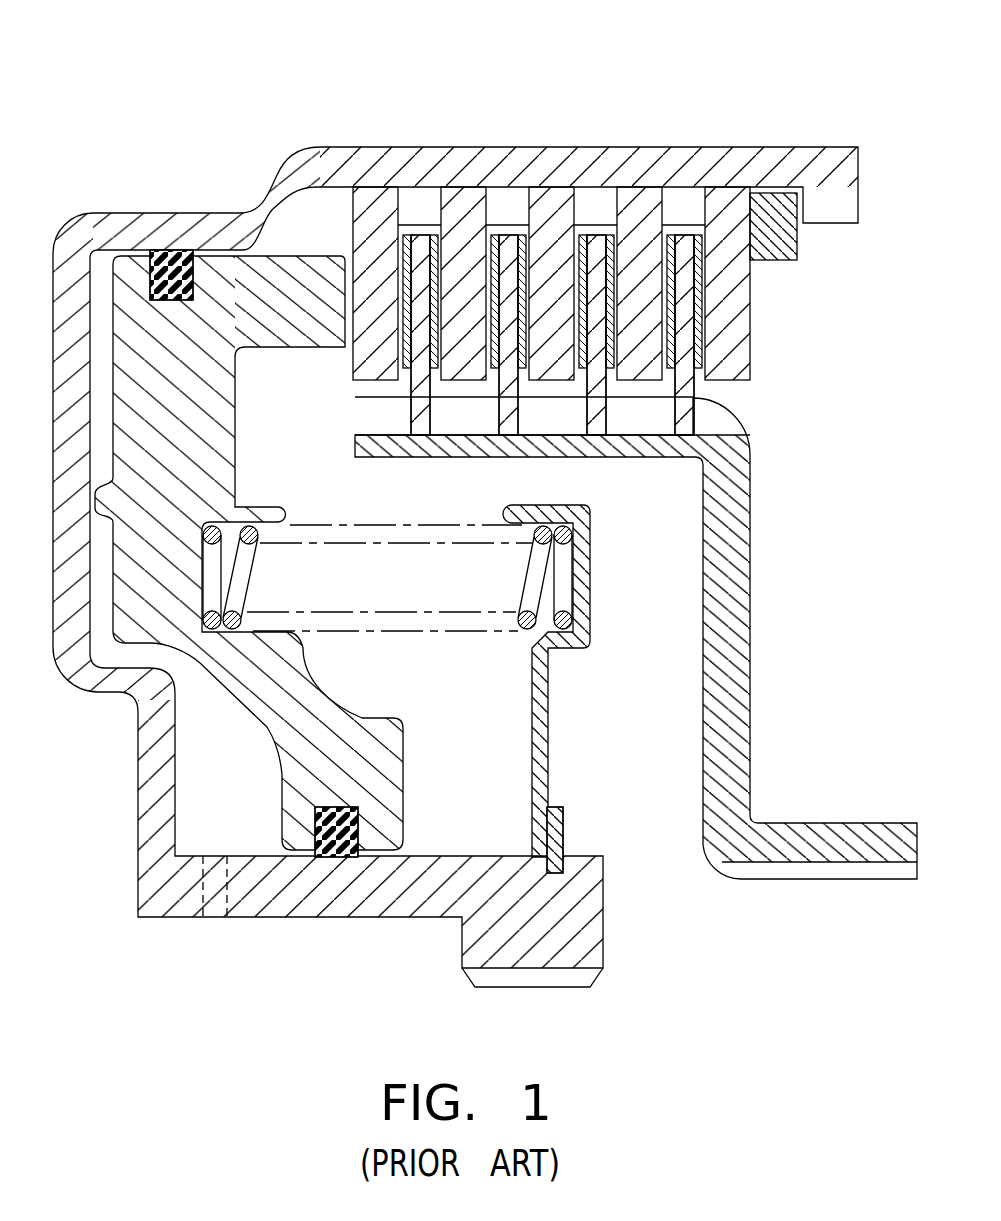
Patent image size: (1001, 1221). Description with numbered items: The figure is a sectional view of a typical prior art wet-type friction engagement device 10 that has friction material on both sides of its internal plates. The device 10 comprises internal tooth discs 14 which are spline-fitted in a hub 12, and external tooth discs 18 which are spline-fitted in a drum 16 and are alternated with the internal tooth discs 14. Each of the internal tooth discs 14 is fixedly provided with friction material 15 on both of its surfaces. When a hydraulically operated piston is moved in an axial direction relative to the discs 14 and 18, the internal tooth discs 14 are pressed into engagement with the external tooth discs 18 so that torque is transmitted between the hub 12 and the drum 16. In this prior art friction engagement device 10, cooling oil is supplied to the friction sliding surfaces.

The wet-type friction engagement device 10 is at (208, 126).
The hub 12 is at (770, 559).
The internal tooth discs 14 is at (683, 432).
The friction material 15 is at (695, 318).
The drum 16 is at (585, 252).
The external tooth discs 18 is at (735, 202).